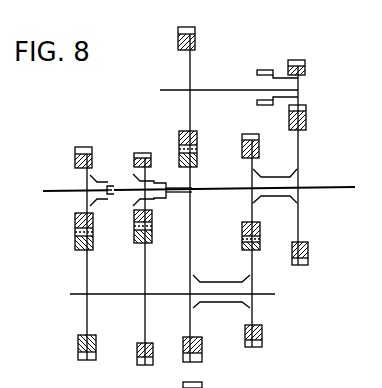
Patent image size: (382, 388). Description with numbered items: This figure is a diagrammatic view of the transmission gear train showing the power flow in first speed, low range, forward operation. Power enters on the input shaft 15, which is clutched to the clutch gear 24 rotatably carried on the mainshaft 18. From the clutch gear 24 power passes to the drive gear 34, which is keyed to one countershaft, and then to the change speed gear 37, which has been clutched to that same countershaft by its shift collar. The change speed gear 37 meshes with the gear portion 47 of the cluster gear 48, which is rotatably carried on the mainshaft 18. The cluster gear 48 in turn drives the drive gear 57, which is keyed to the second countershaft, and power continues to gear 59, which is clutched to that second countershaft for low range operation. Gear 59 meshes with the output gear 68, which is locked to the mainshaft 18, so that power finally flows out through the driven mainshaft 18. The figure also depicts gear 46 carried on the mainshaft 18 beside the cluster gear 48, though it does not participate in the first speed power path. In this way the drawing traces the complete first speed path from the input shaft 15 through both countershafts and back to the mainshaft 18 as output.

The input shaft 15 is at (55, 190).
The mainshaft 18 is at (344, 187).
The clutch gear 24 is at (145, 174).
The drive gear 34 is at (142, 363).
The change speed gear 37 is at (263, 341).
The gear 46 is at (197, 146).
The gear portion 47 is at (248, 136).
The cluster gear 48 is at (218, 193).
The drive gear 57 is at (194, 31).
The gear 59 is at (298, 60).
The output gear 68 is at (305, 122).